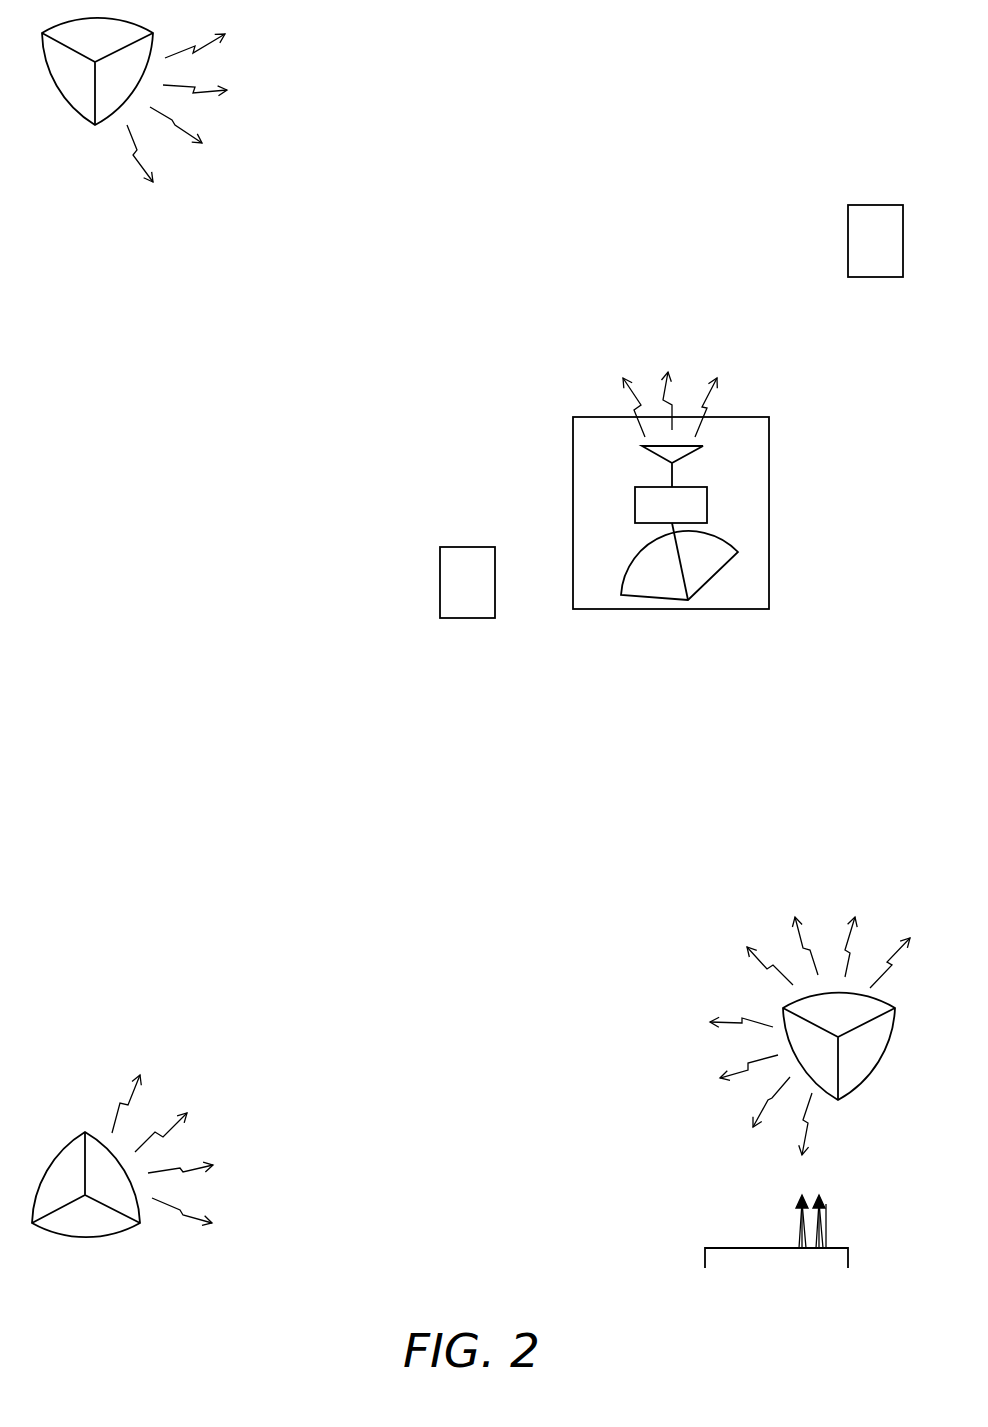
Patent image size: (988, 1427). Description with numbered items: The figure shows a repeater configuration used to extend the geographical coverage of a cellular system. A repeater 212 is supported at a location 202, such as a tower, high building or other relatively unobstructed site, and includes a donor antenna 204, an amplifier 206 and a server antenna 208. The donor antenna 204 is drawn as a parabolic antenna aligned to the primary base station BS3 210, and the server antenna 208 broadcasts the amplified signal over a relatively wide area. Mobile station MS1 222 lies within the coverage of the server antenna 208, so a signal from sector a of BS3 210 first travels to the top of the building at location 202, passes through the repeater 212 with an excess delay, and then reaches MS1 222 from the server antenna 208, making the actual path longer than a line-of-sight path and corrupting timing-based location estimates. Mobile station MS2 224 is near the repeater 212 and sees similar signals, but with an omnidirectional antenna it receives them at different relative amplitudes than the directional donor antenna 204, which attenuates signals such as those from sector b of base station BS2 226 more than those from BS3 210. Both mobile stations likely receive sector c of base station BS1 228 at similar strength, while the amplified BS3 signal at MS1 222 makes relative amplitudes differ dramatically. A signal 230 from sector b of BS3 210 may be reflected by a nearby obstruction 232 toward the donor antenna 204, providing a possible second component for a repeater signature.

The location 202 is at (602, 612).
The donor antenna 204 is at (657, 549).
The amplifier 206 is at (635, 505).
The server antenna 208 is at (657, 455).
The primary base station BS3 210 is at (743, 970).
The repeater 212 is at (582, 365).
The mobile station MS1 222 is at (858, 205).
The mobile station MS2 224 is at (462, 547).
The base station BS2 226 is at (153, 1233).
The base station BS1 228 is at (53, 141).
The signal 230 is at (777, 1207).
The obstruction 232 is at (703, 1258).